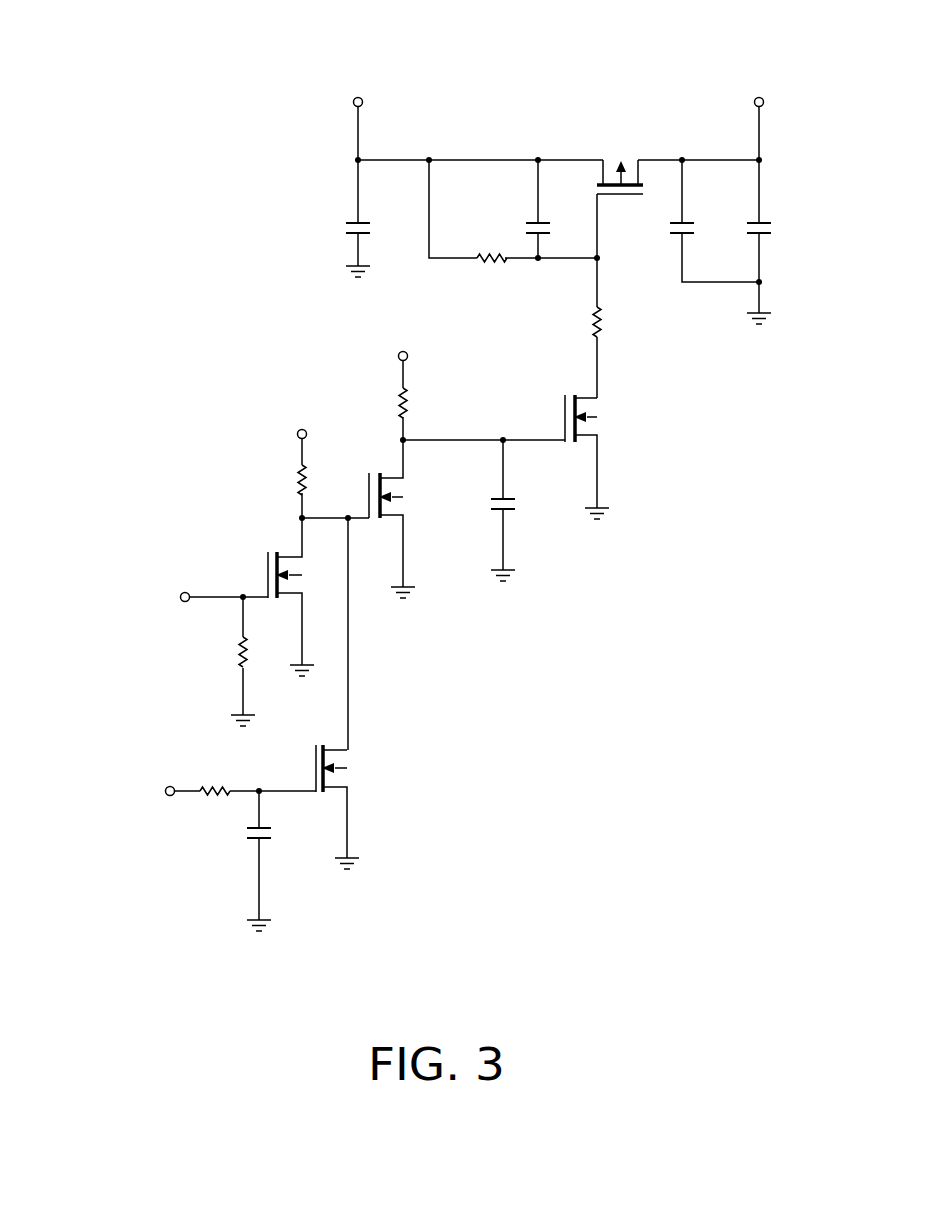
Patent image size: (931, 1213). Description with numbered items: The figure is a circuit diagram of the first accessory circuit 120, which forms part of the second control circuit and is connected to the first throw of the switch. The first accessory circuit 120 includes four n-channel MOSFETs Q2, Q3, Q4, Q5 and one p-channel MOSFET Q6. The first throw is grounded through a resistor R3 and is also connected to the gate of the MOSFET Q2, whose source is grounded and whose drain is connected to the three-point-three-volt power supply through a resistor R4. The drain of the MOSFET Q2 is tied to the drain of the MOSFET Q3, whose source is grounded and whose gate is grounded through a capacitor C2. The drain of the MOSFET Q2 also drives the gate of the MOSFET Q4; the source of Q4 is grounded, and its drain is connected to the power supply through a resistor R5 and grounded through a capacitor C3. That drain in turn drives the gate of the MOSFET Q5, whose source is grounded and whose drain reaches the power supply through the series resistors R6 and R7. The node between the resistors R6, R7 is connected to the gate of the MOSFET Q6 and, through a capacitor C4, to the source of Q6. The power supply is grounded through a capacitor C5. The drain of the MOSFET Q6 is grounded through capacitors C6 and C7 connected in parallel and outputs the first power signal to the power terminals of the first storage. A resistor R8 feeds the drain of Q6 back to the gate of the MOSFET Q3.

The first accessory circuit 120 is at (499, 66).
The MOSFET Q2 is at (264, 597).
The MOSFET Q3 is at (322, 807).
The MOSFET Q4 is at (374, 519).
The MOSFET Q5 is at (522, 457).
The MOSFET Q6 is at (620, 190).
The resistor R3 is at (225, 661).
The resistor R4 is at (290, 459).
The resistor R5 is at (394, 381).
The resistor R6 is at (575, 328).
The resistor R7 is at (513, 211).
The resistor R8 is at (146, 780).
The capacitor C2 is at (275, 861).
The capacitor C3 is at (519, 510).
The capacitor C4 is at (554, 209).
The capacitor C5 is at (374, 249).
The capacitor C6 is at (714, 221).
The capacitor C7 is at (776, 273).